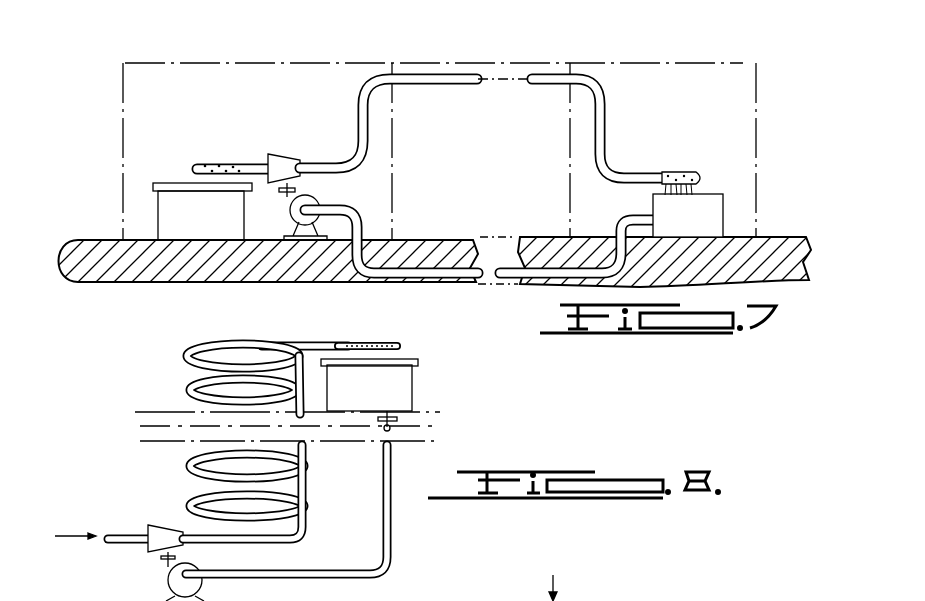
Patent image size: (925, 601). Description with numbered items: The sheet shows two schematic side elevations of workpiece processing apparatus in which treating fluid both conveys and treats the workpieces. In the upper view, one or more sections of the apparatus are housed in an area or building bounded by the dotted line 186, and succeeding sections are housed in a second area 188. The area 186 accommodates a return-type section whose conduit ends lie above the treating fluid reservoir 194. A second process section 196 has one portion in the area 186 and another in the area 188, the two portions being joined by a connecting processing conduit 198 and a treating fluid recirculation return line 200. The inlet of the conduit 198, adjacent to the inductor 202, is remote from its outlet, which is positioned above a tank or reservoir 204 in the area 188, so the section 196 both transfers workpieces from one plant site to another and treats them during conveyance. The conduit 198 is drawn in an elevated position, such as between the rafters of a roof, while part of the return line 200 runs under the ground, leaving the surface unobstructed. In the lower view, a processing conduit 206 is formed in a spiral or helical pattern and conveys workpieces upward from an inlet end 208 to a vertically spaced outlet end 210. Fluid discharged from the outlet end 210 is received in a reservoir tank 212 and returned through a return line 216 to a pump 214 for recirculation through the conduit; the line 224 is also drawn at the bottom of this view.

In FIG. 7, the area 186 is at (407, 188).
In FIG. 7, the second area 188 is at (757, 147).
In FIG. 7, the treating fluid reservoir 194 is at (177, 208).
In FIG. 7, the second process section 196 is at (366, 142).
In FIG. 7, the connecting processing conduit 198 is at (434, 72).
In FIG. 7, the treating fluid recirculation return line 200 is at (462, 276).
In FIG. 7, the inductor 202 is at (286, 157).
In FIG. 7, the tank or reservoir 204 is at (712, 218).
In FIG. 8, the processing conduit 206 is at (183, 470).
In FIG. 8, the inlet end 208 is at (132, 537).
In FIG. 8, the outlet end 210 is at (339, 341).
In FIG. 8, the reservoir tank 212 is at (400, 383).
In FIG. 8, the pump 214 is at (198, 568).
In FIG. 8, the return line 216 is at (390, 537).
In FIG. 8, the drain line 224 is at (388, 598).